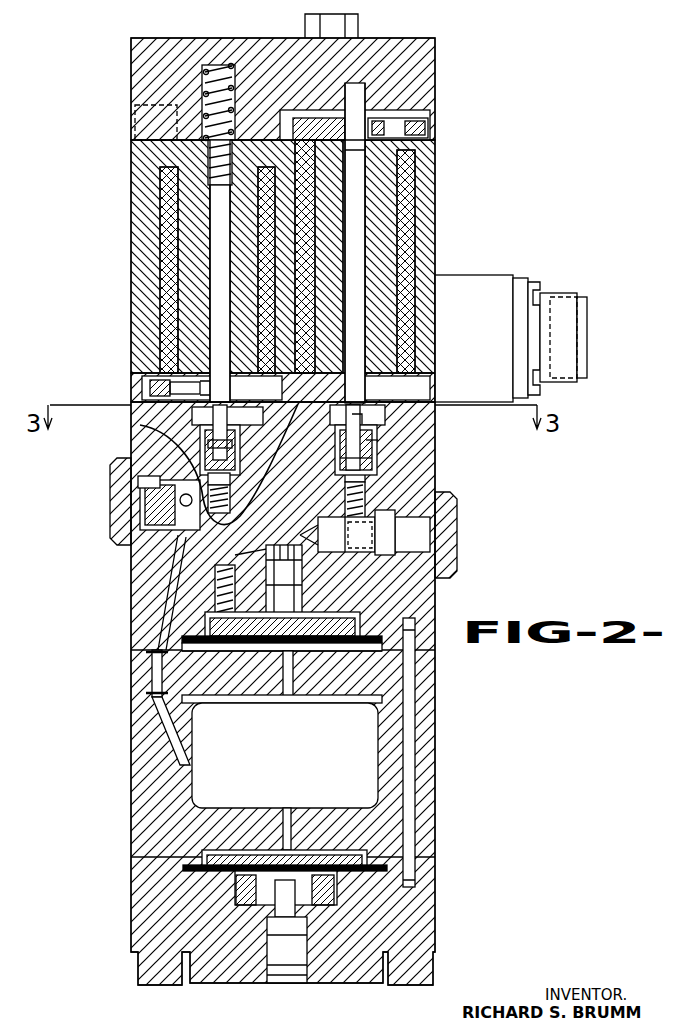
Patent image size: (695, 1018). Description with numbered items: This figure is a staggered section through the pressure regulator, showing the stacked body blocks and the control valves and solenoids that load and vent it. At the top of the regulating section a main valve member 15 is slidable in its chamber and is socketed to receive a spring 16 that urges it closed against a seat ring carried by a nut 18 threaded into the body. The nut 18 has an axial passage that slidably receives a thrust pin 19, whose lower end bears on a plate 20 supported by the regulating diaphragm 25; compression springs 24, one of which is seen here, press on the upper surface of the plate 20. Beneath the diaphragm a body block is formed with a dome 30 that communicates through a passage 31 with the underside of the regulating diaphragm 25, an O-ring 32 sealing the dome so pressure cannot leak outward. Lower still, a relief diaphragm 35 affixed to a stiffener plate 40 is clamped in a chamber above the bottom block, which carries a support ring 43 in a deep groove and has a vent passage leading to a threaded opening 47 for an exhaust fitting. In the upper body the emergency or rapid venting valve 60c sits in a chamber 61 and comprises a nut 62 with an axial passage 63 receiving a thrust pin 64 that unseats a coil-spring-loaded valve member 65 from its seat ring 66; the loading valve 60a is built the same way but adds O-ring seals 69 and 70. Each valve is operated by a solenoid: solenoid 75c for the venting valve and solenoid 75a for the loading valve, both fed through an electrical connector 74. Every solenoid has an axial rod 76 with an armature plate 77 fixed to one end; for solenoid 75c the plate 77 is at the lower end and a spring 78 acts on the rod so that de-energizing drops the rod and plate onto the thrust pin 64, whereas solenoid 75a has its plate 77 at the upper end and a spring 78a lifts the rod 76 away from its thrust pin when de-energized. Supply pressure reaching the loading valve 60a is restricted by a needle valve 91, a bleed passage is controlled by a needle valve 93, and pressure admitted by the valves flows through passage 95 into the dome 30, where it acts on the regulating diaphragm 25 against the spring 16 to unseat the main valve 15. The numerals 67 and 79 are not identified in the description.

The main valve member 15 is at (302, 558).
The spring 16 is at (272, 548).
The nut 18 is at (350, 612).
The thrust pin 19 is at (300, 600).
The plate 20 is at (380, 640).
The compression springs 24 is at (222, 592).
The regulating diaphragm 25 is at (372, 652).
The dome 30 is at (378, 763).
The passage 31 is at (288, 690).
The O-ring 32 is at (286, 822).
The relief diaphragm 35 is at (185, 869).
The stiffener plate 40 is at (236, 866).
The support ring 43 is at (236, 905).
The threaded opening 47 is at (302, 950).
The loading valve 60a is at (380, 438).
The emergency or rapid venting valve 60c is at (170, 416).
The chamber 61 is at (365, 460).
The nut 62 is at (222, 428).
The axial passage 63 is at (294, 408).
The thrust pin 64 is at (232, 437).
The valve member 65 is at (210, 500).
The seat ring 66 is at (205, 478).
The needle valve 67 is at (233, 533).
The O-ring seal 69 is at (360, 418).
The O-ring seal 70 is at (372, 445).
The electrical connector 74 is at (563, 297).
The solenoid 75a is at (447, 216).
The solenoid 75c is at (122, 219).
The axial rod 76 is at (364, 193).
The armature plate 77 is at (307, 122).
The spring 78 is at (222, 64).
The spring 78a is at (405, 150).
The cover block 79 is at (435, 73).
The needle valve 91 is at (458, 540).
The needle valve 93 is at (112, 520).
The passage 95 is at (166, 732).